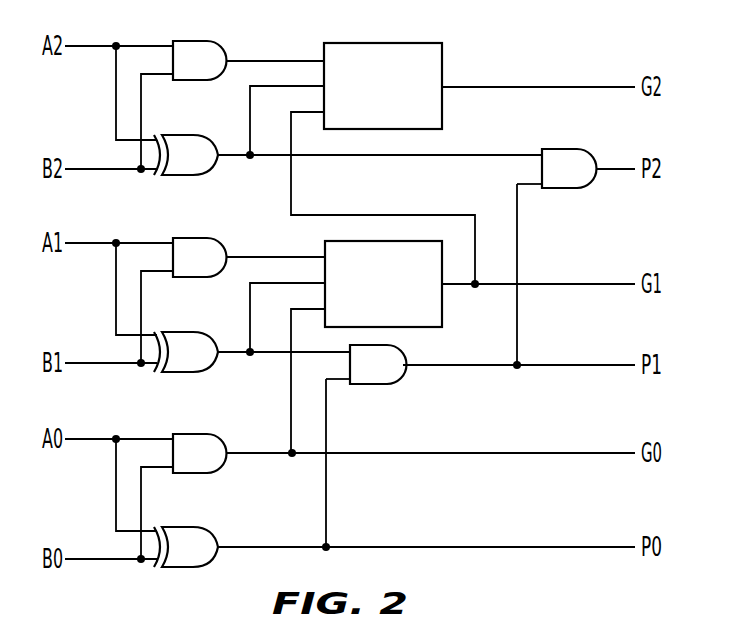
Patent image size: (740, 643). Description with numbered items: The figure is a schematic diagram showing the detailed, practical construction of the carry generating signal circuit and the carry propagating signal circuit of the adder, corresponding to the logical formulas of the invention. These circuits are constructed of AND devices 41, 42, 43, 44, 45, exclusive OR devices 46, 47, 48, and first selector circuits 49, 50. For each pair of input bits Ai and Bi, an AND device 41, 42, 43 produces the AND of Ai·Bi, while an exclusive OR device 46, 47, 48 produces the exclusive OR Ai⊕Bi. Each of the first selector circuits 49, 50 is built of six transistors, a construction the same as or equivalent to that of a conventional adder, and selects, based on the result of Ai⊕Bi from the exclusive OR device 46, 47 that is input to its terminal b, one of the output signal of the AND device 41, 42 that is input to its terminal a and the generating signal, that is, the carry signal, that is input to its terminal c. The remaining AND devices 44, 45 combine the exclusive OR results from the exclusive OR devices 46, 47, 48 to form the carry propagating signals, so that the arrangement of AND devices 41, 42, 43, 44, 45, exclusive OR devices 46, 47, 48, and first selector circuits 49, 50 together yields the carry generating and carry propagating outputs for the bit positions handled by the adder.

The AND device 41 is at (203, 45).
The AND device 42 is at (203, 243).
The AND device 43 is at (203, 438).
The AND device 44 is at (388, 381).
The AND device 45 is at (568, 189).
The exclusive OR device 46 is at (207, 136).
The exclusive OR device 47 is at (207, 332).
The exclusive OR device 48 is at (207, 527).
The first selector circuit 49 is at (437, 60).
The first selector circuit 50 is at (437, 310).